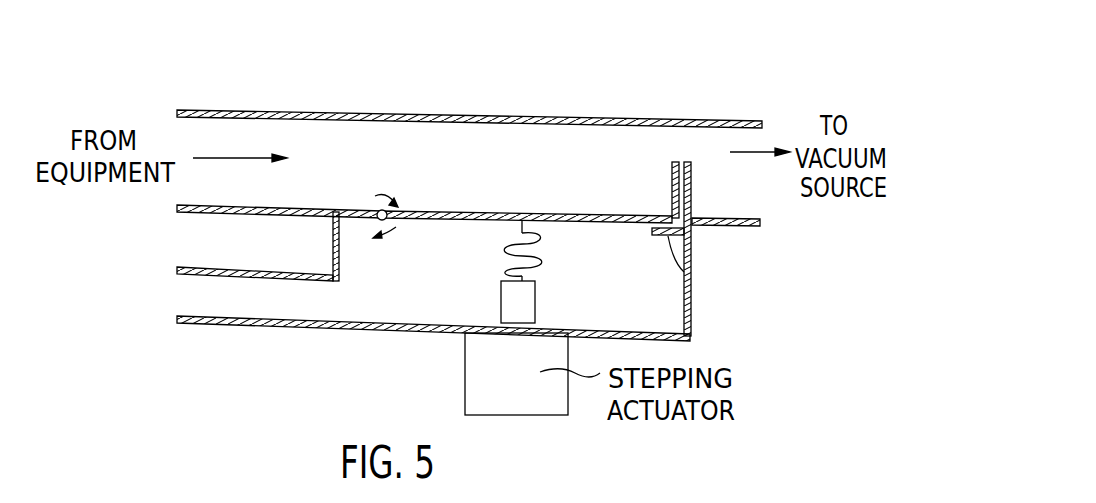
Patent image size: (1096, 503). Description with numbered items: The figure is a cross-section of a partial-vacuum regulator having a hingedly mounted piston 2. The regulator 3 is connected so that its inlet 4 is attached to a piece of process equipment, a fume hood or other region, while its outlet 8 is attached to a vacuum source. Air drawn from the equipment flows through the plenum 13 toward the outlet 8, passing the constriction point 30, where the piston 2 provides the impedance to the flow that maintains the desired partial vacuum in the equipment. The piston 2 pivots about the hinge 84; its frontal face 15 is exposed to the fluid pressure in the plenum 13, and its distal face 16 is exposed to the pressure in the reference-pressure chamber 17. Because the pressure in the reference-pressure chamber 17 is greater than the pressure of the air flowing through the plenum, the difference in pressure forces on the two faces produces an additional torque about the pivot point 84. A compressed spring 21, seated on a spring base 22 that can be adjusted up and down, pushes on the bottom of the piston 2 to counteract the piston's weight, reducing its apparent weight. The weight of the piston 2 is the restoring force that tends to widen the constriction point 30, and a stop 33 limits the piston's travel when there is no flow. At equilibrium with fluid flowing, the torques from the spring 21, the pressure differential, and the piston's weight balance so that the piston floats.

The piston 2 is at (424, 221).
The conduit 3 is at (469, 94).
The inlet 4 is at (225, 110).
The outlet 8 is at (733, 119).
The plenum 13 is at (606, 176).
The frontal face 15 is at (422, 215).
The distal face 16 is at (418, 221).
The reference-pressure chamber 17 is at (665, 305).
The compressed spring 21 is at (543, 243).
The spring base 22 is at (500, 302).
The constriction point 30 is at (680, 152).
The stop 33 is at (692, 278).
The hinge 84 is at (378, 211).